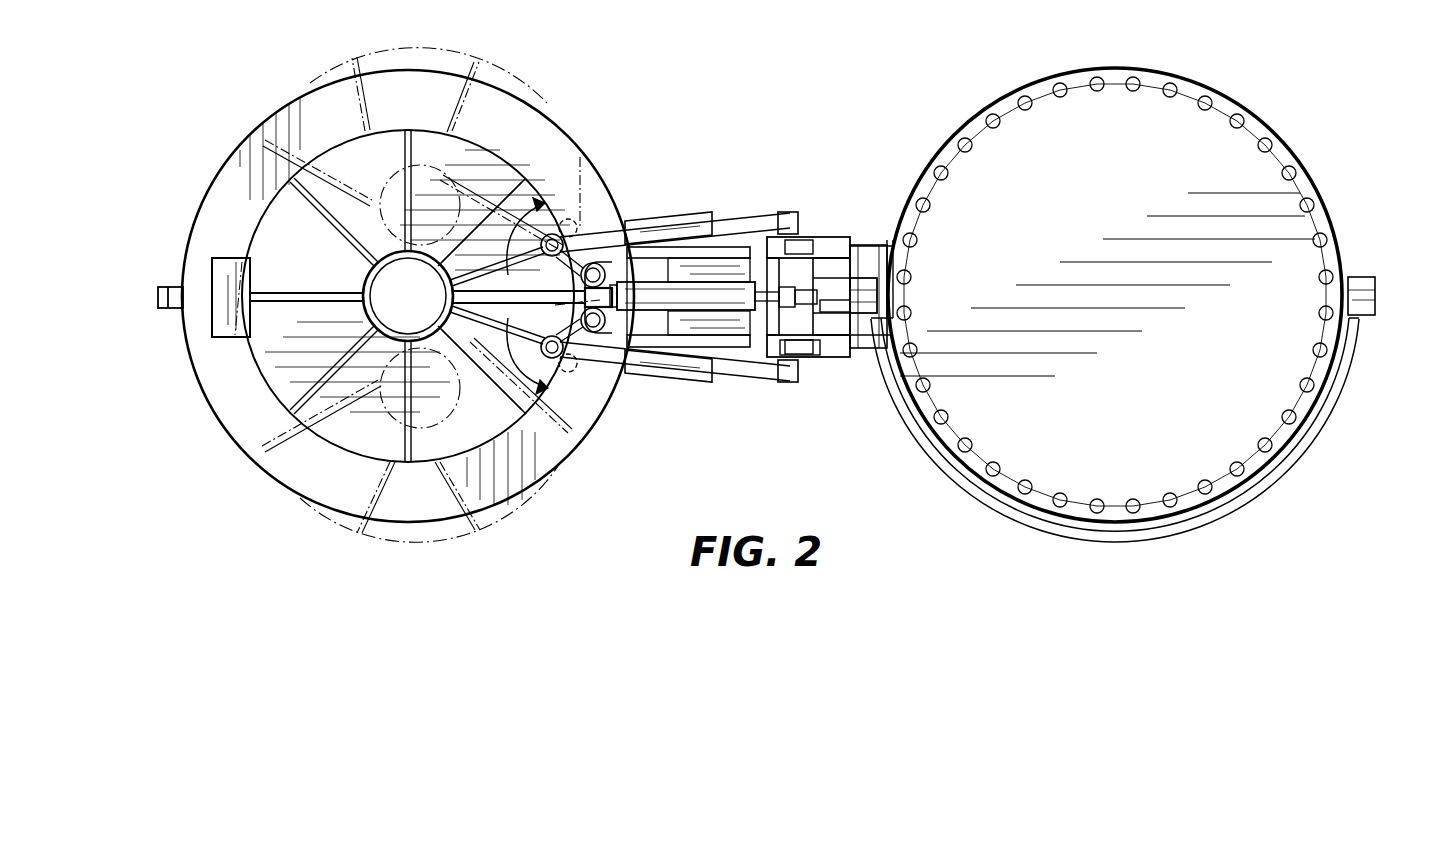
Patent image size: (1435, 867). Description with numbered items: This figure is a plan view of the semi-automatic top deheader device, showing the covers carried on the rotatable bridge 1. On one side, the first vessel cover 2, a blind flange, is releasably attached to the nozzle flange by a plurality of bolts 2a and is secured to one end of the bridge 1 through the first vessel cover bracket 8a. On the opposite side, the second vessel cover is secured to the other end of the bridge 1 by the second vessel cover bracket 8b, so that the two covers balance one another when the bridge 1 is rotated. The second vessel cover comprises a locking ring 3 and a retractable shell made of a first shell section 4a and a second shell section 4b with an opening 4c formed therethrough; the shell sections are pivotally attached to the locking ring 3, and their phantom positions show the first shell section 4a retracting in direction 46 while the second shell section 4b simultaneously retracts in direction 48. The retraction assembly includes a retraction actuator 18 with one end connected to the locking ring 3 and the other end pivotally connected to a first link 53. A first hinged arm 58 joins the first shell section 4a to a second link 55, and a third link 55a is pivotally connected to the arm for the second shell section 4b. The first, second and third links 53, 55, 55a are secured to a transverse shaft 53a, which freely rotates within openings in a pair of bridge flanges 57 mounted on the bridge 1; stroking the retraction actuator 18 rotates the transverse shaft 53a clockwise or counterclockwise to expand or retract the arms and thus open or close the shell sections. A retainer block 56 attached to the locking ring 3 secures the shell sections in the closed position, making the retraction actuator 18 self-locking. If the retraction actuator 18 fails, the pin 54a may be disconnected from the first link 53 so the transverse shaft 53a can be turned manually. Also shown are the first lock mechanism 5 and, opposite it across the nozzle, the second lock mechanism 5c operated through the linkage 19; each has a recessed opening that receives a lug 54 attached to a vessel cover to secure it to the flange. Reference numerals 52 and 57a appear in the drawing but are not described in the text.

The bridge 1 is at (743, 347).
The first vessel cover 2 is at (1262, 120).
The bolts 2a is at (1298, 170).
The locking ring 3 is at (190, 357).
The first shell section 4a is at (265, 377).
The second shell section 4b is at (265, 223).
The opening 4c is at (367, 283).
The first lock mechanism 5 is at (862, 270).
The second lock mechanism 5c is at (1365, 308).
The first vessel cover bracket 8a is at (897, 245).
The second vessel cover bracket 8b is at (716, 232).
The retraction actuator 18 is at (650, 250).
The linkage 19 is at (1295, 462).
The direction 46 is at (563, 393).
The direction 48 is at (560, 212).
The drive cylinder 52 is at (760, 282).
The first link 53 is at (835, 258).
The transverse shaft 53a is at (835, 357).
The lug 54 is at (158, 305).
The pin 54a is at (774, 225).
The second link 55 is at (817, 355).
The third link 55a is at (812, 225).
The retainer block 56 is at (212, 278).
The bridge flanges 57 is at (818, 250).
The shaft 57a is at (795, 330).
The first hinged arm 58 is at (605, 262).